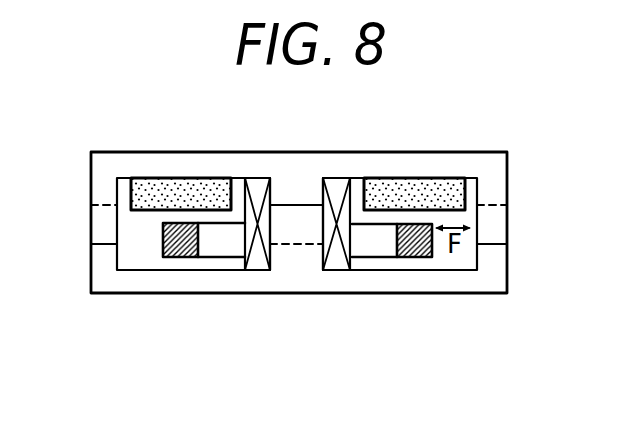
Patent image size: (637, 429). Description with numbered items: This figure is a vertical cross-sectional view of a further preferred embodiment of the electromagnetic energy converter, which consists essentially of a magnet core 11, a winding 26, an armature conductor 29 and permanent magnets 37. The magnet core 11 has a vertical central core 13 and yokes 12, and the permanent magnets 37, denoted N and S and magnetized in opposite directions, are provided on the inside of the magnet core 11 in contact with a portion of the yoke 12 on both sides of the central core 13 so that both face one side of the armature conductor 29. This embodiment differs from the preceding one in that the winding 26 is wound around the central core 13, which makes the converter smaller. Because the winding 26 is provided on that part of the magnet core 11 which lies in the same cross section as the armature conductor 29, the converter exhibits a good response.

The magnet core 11 is at (490, 145).
The yoke 12 is at (388, 165).
The central core 13 is at (298, 182).
The winding 26 is at (333, 260).
The armature conductor 29 is at (183, 247).
The permanent magnet 37 is at (213, 178).